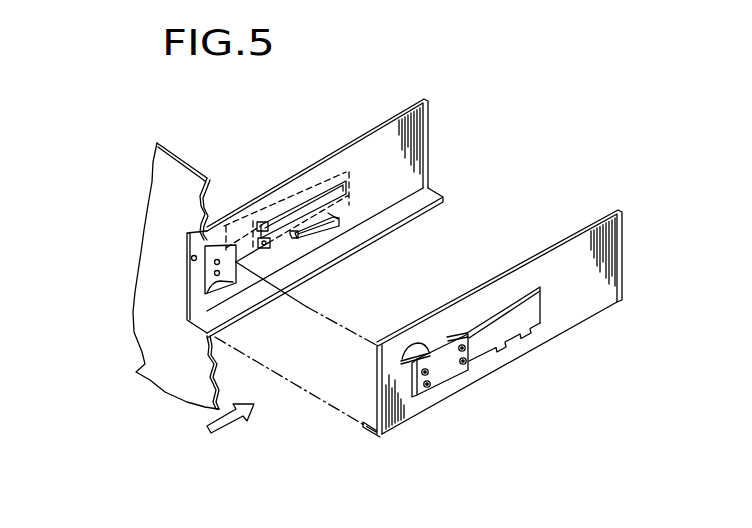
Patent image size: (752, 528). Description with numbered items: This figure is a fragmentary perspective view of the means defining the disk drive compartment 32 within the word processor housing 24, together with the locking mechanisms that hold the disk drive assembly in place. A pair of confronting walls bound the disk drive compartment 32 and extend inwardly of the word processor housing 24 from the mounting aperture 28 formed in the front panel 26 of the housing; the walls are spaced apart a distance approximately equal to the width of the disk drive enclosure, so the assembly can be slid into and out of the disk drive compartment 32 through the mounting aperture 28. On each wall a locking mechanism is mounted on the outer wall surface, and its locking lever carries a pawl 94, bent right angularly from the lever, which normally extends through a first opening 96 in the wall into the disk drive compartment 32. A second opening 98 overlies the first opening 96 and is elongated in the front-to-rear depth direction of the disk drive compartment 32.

The word processor housing 24 is at (144, 181).
The front panel 26 is at (147, 308).
The mounting aperture 28 is at (199, 258).
The disk drive compartment 32 is at (474, 247).
The pawl 94 is at (338, 220).
The first opening 96 is at (300, 239).
The second opening 98 is at (323, 196).